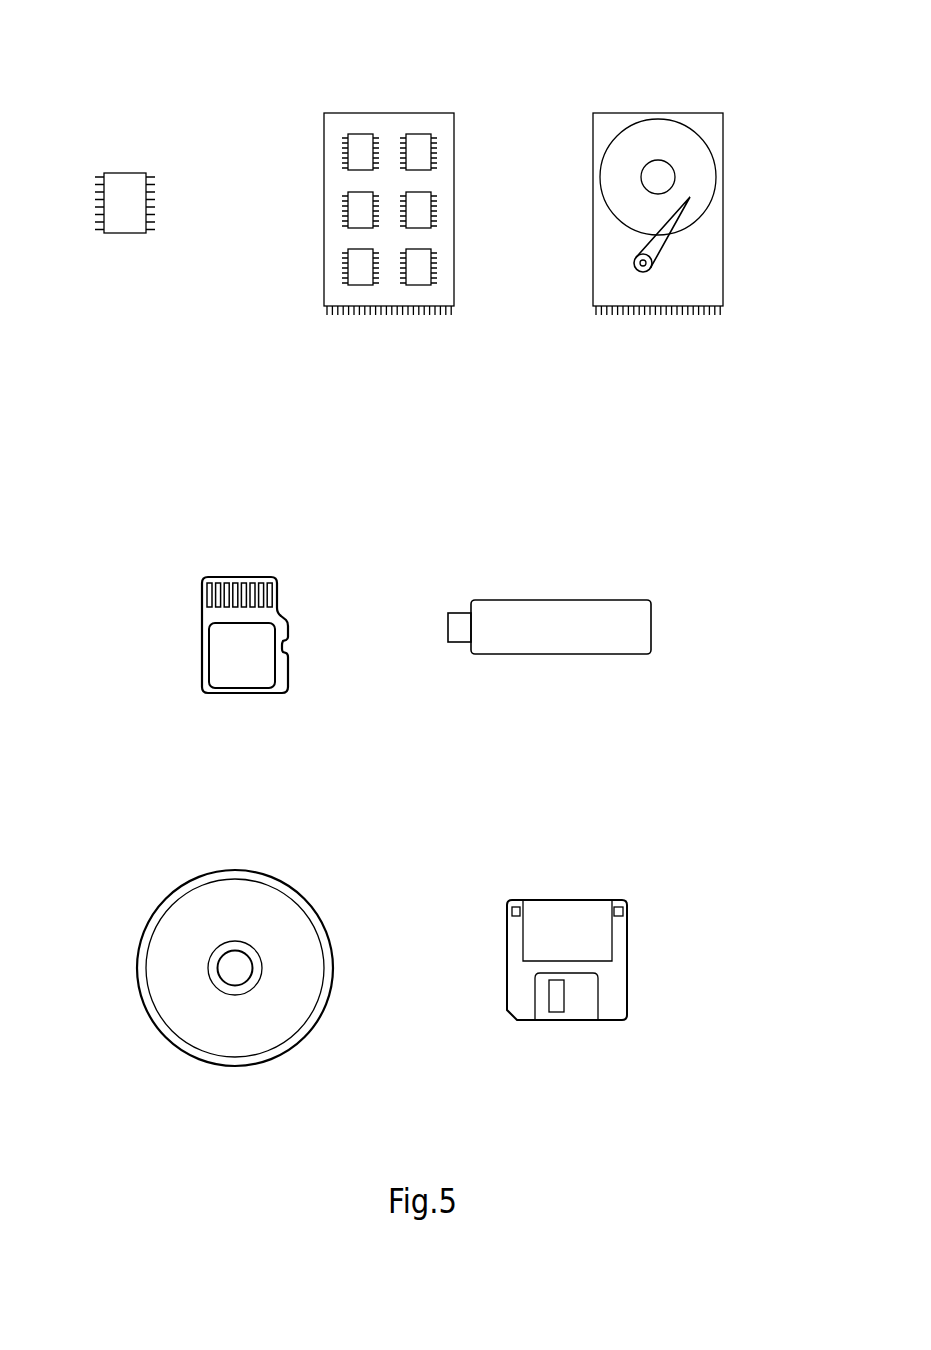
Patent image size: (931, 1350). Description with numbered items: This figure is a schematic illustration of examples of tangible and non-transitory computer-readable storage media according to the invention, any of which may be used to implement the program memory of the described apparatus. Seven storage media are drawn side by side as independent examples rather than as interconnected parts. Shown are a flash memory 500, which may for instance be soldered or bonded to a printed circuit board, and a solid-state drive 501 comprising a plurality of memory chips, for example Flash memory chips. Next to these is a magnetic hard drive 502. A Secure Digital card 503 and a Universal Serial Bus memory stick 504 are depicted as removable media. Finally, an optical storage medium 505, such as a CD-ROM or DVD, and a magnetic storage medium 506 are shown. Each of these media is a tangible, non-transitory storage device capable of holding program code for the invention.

The flash memory 500 is at (148, 136).
The solid-state drive 501 is at (457, 76).
The magnetic hard drive 502 is at (725, 76).
The Secure Digital (SD) card 503 is at (277, 545).
The Universal Serial Bus (USB) memory stick 504 is at (628, 565).
The optical storage medium 505 is at (315, 865).
The magnetic storage medium 506 is at (622, 865).